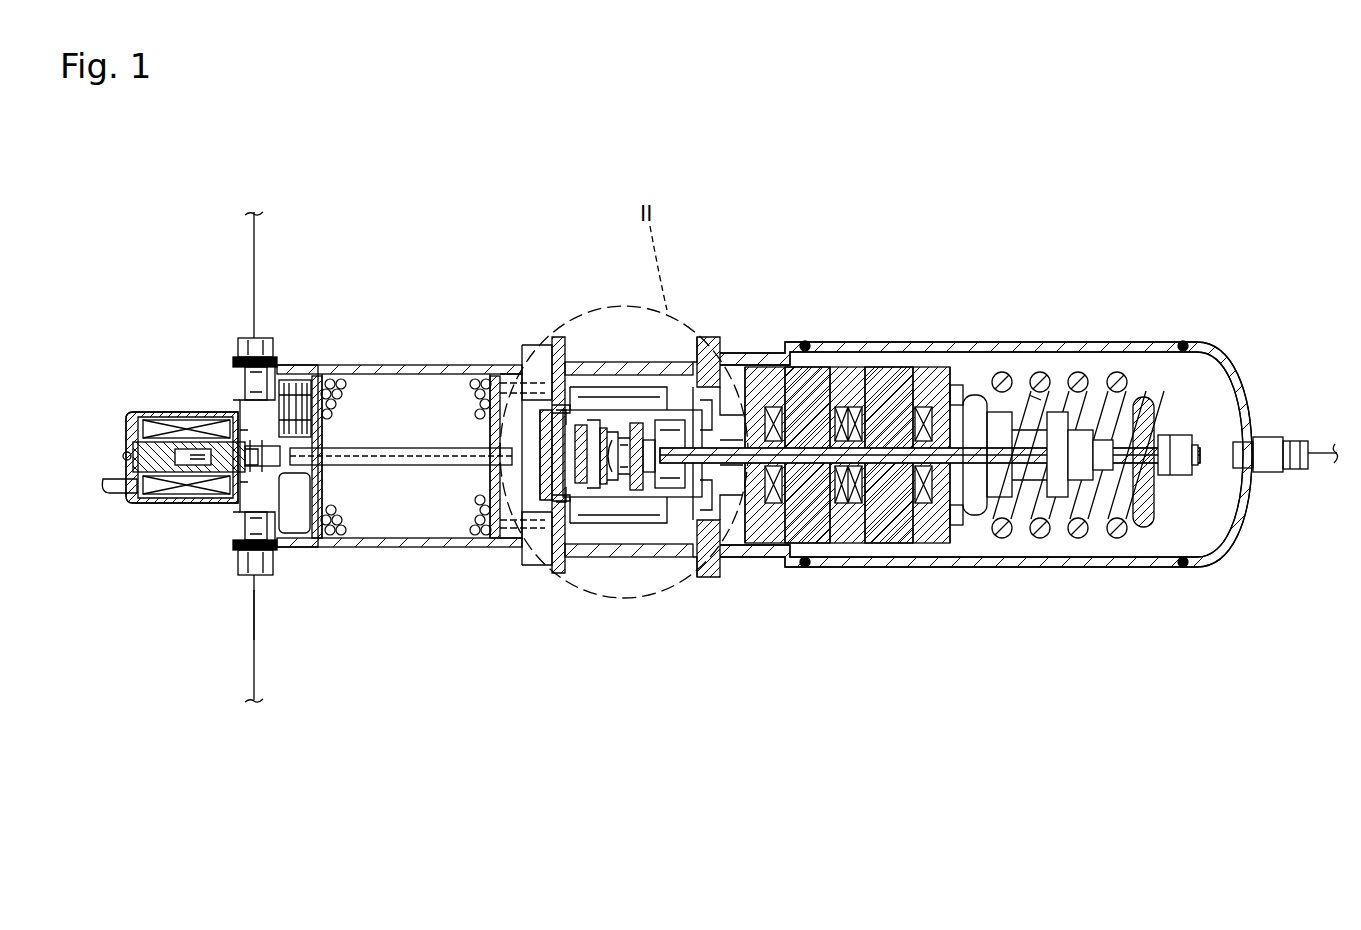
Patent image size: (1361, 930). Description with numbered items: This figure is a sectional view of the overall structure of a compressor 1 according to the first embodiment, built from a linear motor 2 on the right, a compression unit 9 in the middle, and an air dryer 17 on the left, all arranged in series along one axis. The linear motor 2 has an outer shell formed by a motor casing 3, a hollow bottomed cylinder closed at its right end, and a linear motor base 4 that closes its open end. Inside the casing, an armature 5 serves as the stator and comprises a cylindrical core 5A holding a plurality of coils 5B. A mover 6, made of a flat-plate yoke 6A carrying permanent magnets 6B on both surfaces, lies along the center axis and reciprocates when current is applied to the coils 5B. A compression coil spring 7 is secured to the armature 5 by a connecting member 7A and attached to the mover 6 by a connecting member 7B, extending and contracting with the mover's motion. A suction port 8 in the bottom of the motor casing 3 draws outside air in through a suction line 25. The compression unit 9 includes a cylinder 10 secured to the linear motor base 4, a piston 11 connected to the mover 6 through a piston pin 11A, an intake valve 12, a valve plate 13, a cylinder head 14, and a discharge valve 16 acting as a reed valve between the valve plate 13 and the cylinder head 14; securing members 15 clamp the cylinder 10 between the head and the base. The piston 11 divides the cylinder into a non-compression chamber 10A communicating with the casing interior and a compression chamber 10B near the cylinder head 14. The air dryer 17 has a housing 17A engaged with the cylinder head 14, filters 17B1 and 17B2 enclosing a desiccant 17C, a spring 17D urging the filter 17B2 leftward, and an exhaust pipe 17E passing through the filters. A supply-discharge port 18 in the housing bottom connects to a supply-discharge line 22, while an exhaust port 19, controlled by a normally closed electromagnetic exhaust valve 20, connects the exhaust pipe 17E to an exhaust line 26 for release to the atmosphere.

The compressor 1 is at (446, 178).
The linear motor 2 is at (956, 428).
The motor casing 3 is at (1050, 568).
The linear motor base 4 is at (700, 562).
The armature 5 is at (851, 511).
The core 5A is at (845, 545).
The coils 5B is at (925, 545).
The mover 6 is at (971, 414).
The yoke 6A is at (800, 405).
The permanent magnets 6B is at (872, 405).
The spring 7 is at (930, 455).
The connecting member 7A is at (972, 405).
The connecting member 7B is at (1172, 450).
The suction port 8 is at (1265, 474).
The compression unit 9 is at (617, 437).
The cylinder 10 is at (635, 470).
The non-compression chamber 10A is at (680, 430).
The compression chamber 10B is at (577, 435).
The piston 11 is at (660, 482).
The piston pin 11A is at (644, 472).
The intake valve 12 is at (615, 500).
The valve plate 13 is at (572, 500).
The cylinder head 14 is at (560, 405).
The securing members 15 is at (598, 505).
The discharge valve 16 is at (548, 545).
The air dryer 17 is at (421, 402).
The housing 17A is at (435, 366).
The filter 17B1 is at (323, 547).
The filter 17B2 is at (497, 548).
The desiccant 17C is at (432, 542).
The spring 17D is at (526, 438).
The exhaust pipe 17E is at (372, 456).
The supply-discharge port 18 is at (243, 340).
The exhaust port 19 is at (266, 590).
The exhaust valve 20 is at (186, 410).
The supply-discharge line 22 is at (255, 288).
The suction line 25 is at (1336, 463).
The exhaust line 26 is at (254, 590).